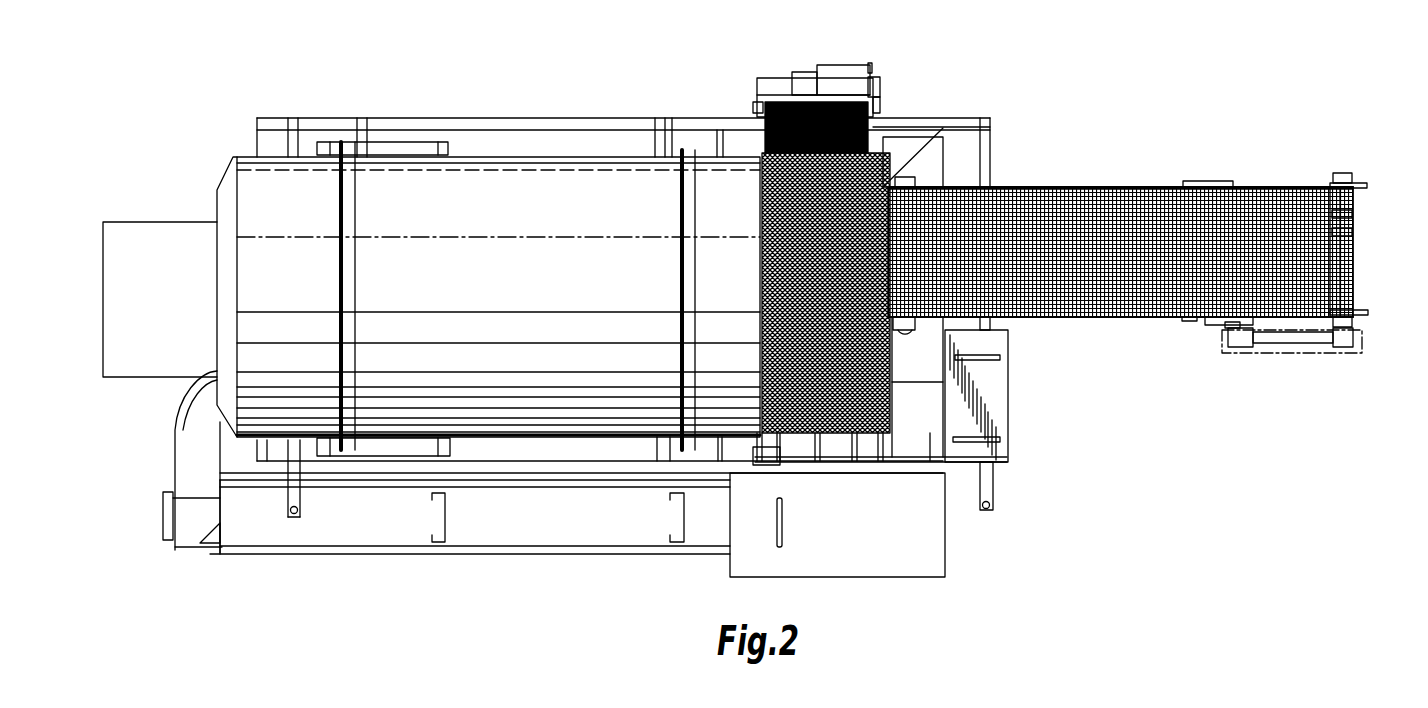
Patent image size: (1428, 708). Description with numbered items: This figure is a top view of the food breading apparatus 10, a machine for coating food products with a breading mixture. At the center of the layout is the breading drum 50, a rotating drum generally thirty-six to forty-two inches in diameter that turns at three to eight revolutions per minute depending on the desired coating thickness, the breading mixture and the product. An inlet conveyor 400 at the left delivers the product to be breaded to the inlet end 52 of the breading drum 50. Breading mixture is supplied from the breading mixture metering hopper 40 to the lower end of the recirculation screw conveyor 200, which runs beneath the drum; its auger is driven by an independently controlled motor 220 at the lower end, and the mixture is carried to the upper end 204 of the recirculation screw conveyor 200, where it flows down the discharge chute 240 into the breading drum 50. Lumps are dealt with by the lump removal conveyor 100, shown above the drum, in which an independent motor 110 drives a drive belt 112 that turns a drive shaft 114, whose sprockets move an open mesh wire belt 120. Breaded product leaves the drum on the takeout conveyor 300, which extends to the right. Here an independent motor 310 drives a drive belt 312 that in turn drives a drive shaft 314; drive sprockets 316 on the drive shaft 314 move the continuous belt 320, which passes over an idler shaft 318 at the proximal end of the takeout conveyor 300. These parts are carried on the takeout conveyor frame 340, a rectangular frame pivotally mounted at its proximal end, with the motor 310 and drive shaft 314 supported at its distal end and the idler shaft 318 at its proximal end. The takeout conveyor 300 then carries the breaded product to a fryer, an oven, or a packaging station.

The food breading apparatus 10 is at (1075, 128).
The breading mixture metering hopper 40 is at (837, 525).
The breading drum 50 is at (498, 299).
The inlet end 52 is at (223, 180).
The lump removal conveyor 100 is at (782, 84).
The motor 110 is at (850, 65).
The drive belt 112 is at (878, 92).
The drive shaft 114 is at (882, 112).
The open mesh wire belt 120 is at (757, 108).
The recirculation screw conveyor 200 is at (552, 562).
The upper end 204 is at (213, 556).
The motor 220 is at (468, 556).
The discharge chute 240 is at (180, 456).
The takeout conveyor 300 is at (1150, 182).
The motor 310 is at (1252, 348).
The drive belt 312 is at (1294, 344).
The drive shaft 314 is at (1353, 229).
The drive sprockets 316 is at (1353, 217).
The idler shaft 318 is at (940, 187).
The continuous belt 320 is at (1066, 185).
The takeout conveyor frame 340 is at (1295, 182).
The inlet conveyor 400 is at (160, 299).